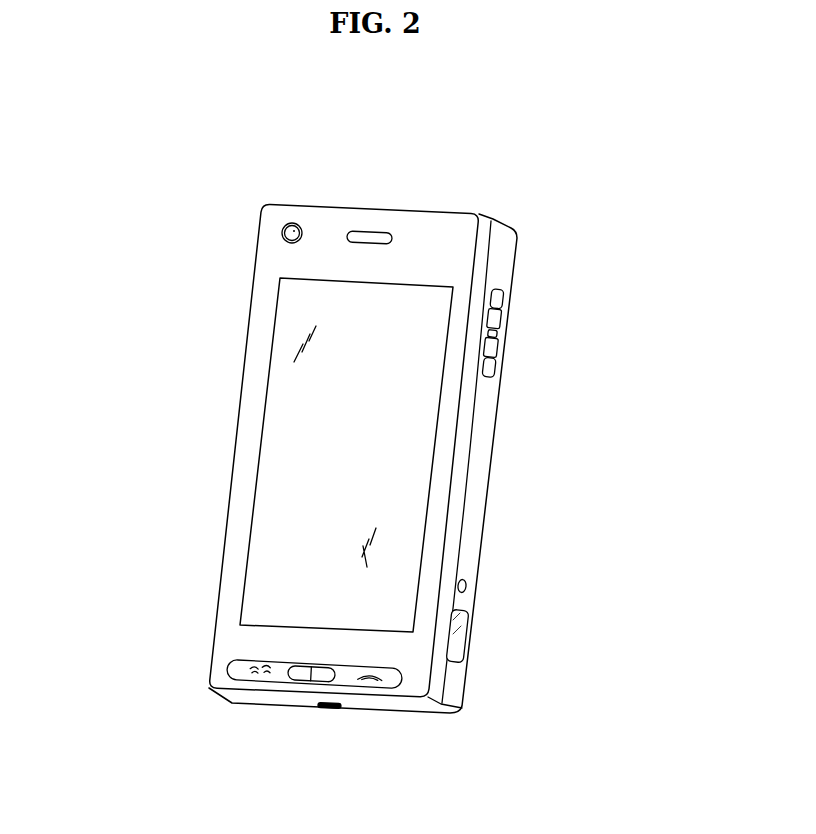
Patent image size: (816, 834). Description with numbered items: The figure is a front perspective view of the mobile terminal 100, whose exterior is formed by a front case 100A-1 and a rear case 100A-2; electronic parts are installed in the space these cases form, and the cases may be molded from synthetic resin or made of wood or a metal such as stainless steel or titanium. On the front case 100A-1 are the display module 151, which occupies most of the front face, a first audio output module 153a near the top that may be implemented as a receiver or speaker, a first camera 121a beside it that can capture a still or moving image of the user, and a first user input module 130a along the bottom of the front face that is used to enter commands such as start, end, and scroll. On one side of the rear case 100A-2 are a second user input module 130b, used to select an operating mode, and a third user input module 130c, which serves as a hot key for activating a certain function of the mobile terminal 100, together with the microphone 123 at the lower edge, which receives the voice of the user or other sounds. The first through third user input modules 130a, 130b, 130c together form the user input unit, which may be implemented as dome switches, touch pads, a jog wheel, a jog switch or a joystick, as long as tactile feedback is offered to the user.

The mobile terminal 100 is at (193, 207).
The front case 100A-1 is at (487, 215).
The rear case 100A-2 is at (507, 251).
The first camera 121a is at (288, 222).
The first audio output module 153a is at (373, 234).
The display module 151 is at (285, 439).
The first user input module 130a is at (249, 659).
The second user input module 130b is at (503, 327).
The third user input module 130c is at (462, 630).
The microphone 123 is at (329, 709).